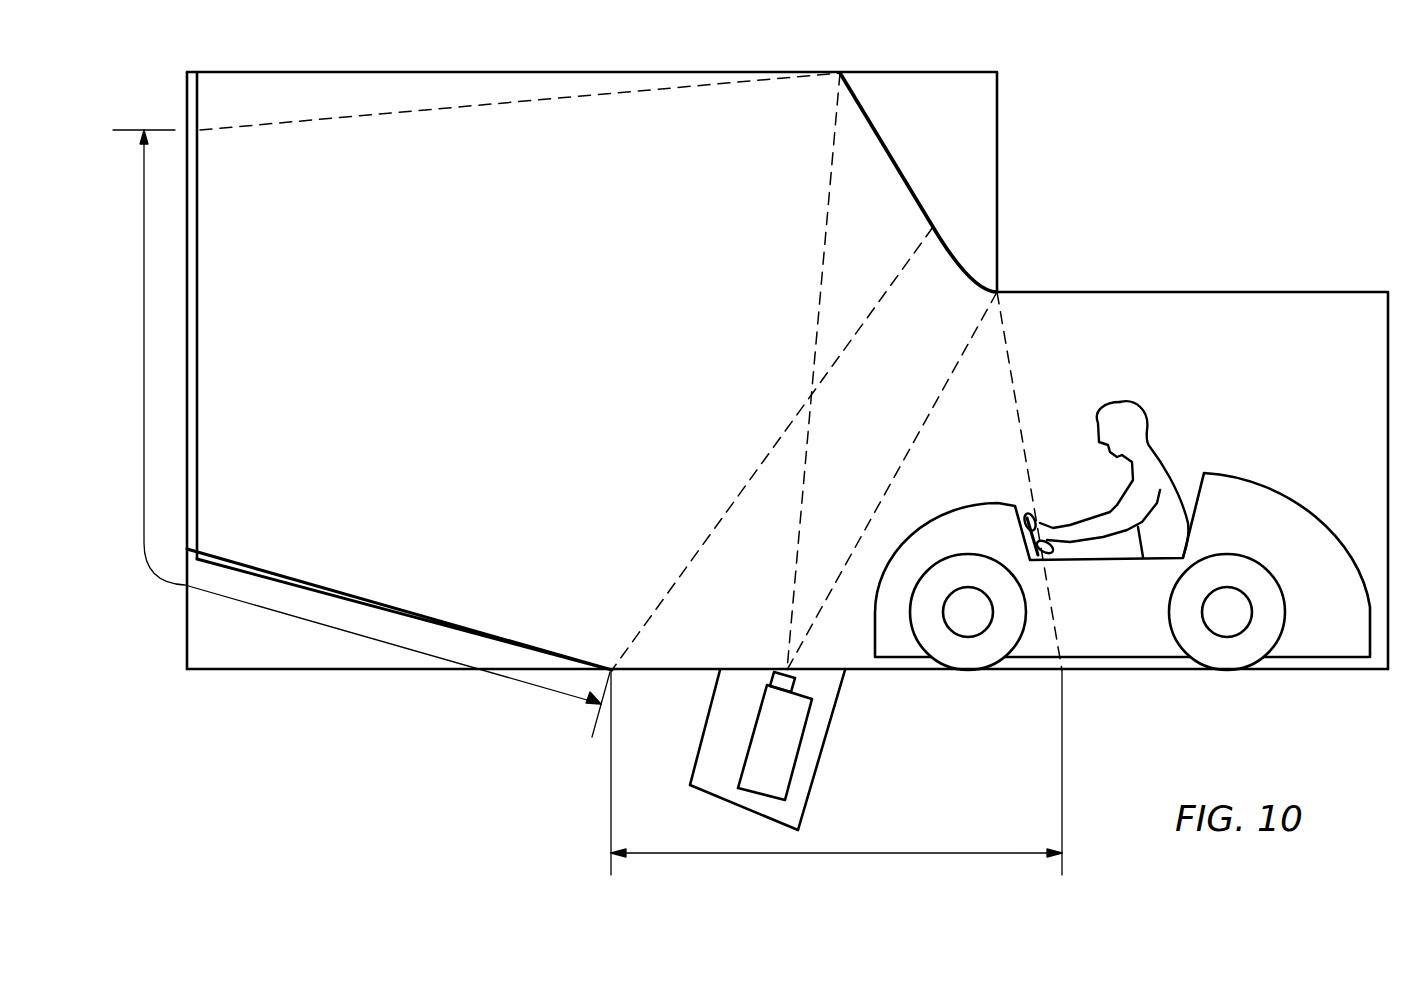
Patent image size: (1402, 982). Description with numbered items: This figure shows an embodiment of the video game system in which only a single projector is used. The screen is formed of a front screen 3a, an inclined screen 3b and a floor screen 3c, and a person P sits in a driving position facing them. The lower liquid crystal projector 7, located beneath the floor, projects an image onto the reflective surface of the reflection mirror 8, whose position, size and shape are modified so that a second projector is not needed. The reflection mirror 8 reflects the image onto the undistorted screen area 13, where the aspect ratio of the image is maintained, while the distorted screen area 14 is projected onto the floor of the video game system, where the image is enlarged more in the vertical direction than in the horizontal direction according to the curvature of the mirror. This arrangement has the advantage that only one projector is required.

The front screen 3a is at (198, 300).
The inclined screen 3b is at (413, 610).
The floor screen 3c is at (678, 670).
The lower liquid crystal projector 7 is at (780, 745).
The reflection mirror 8 is at (890, 153).
The player / driver P is at (1117, 408).
The undistorted screen area 13 is at (143, 298).
The distorted screen area 14 is at (888, 853).